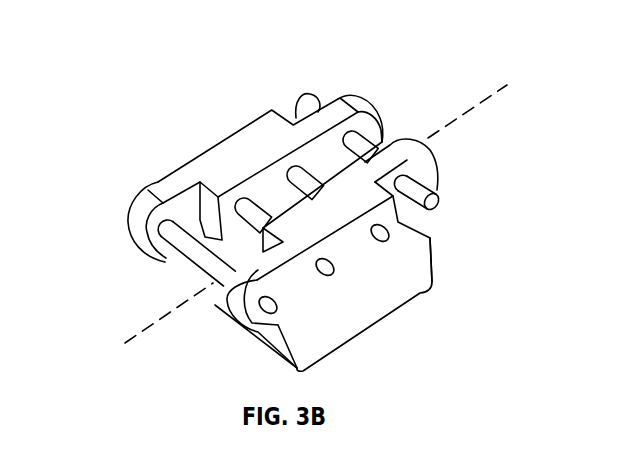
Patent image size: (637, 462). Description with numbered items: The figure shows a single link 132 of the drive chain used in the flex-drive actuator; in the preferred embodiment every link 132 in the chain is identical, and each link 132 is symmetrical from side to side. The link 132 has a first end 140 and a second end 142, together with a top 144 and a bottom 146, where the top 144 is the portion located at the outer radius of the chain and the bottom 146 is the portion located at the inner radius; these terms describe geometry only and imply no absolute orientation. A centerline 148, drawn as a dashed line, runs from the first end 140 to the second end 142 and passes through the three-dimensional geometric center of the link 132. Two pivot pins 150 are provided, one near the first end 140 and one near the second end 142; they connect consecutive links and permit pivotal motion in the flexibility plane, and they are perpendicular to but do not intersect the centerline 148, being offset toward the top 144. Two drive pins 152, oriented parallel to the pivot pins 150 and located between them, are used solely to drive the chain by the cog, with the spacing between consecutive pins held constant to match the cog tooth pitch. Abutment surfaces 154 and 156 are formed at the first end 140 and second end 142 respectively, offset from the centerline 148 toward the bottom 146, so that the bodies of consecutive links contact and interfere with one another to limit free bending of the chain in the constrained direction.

The link 132 is at (178, 97).
The first end 140 is at (122, 215).
The second end 142 is at (447, 173).
The top 144 is at (250, 138).
The bottom 146 is at (384, 333).
The centerline 148 is at (478, 110).
The pivot pins 150 is at (310, 101).
The drive pins 152 is at (294, 174).
The abutment surface 154 is at (275, 340).
The abutment surface 156 is at (446, 254).